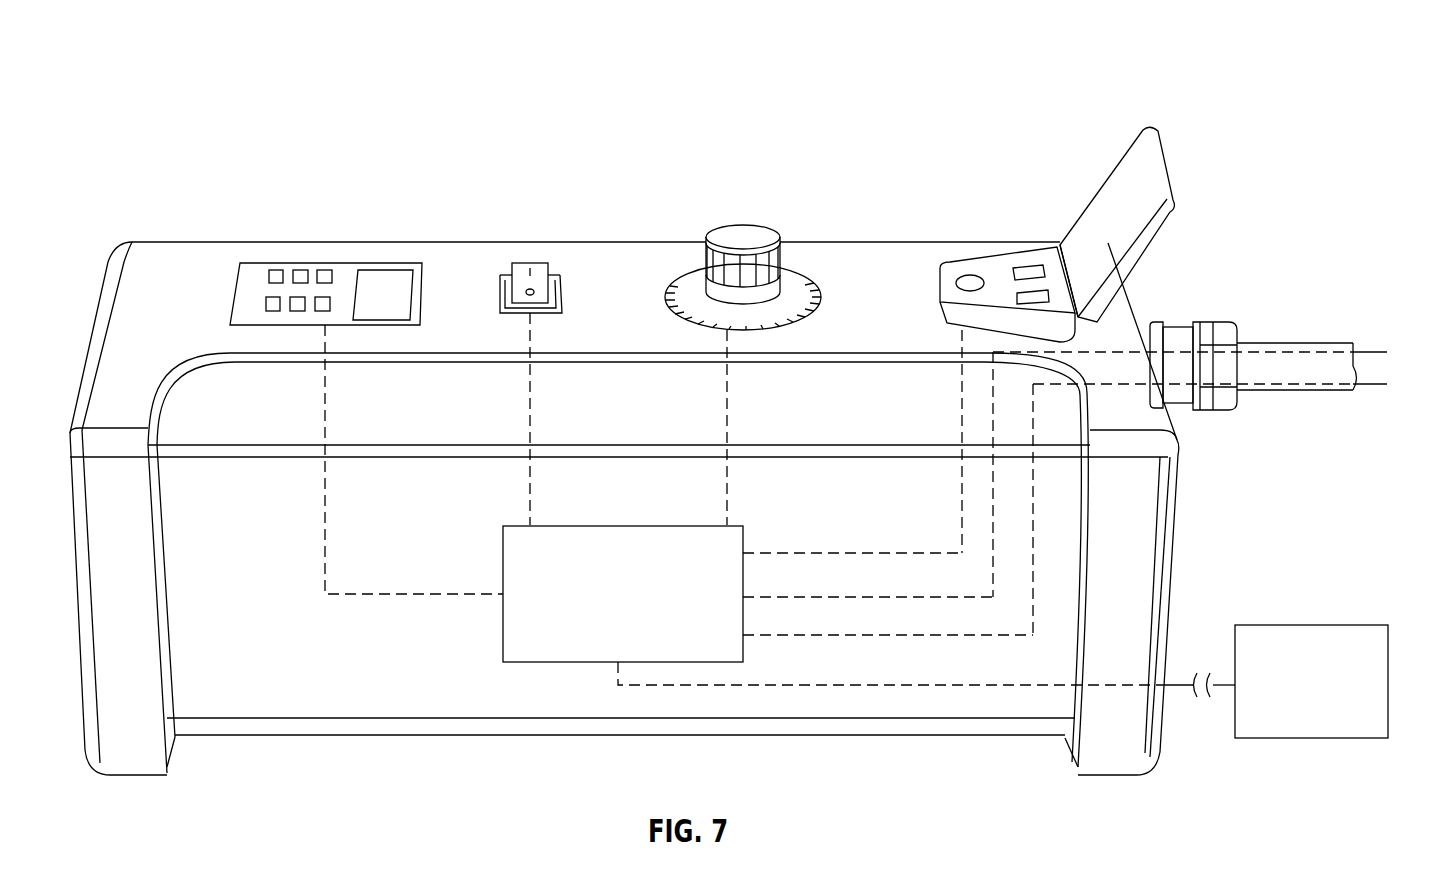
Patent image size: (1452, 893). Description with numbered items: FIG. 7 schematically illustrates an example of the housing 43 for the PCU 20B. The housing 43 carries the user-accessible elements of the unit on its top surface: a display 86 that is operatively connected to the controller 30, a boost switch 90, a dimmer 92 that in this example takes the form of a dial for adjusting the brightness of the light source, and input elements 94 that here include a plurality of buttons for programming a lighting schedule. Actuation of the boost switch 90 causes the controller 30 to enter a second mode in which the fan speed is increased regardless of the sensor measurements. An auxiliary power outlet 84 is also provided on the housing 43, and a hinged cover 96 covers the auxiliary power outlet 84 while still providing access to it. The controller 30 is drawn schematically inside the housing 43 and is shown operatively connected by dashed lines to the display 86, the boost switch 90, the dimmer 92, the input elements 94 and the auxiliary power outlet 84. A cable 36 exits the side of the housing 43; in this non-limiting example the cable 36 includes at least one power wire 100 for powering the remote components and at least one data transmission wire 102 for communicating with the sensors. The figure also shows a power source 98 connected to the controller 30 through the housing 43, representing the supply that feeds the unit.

The PCU 20B is at (842, 112).
The controller 30 is at (553, 663).
The cable 36 is at (1265, 393).
The housing 43 is at (1137, 620).
The auxiliary power outlet 84 is at (992, 272).
The display 86 is at (393, 287).
The boost switch 90 is at (530, 262).
The dimmer 92 is at (745, 232).
The input elements 94 is at (278, 270).
The hinged cover 96 is at (1143, 175).
The power source 98 is at (1332, 625).
The power wire 100 is at (1365, 386).
The data transmission wire 102 is at (1367, 352).